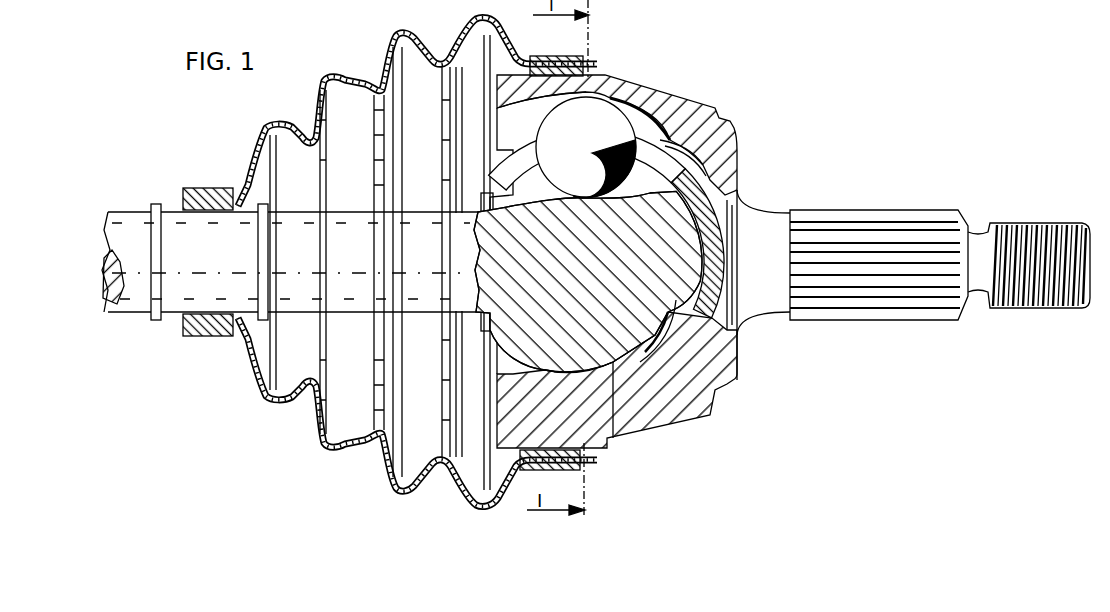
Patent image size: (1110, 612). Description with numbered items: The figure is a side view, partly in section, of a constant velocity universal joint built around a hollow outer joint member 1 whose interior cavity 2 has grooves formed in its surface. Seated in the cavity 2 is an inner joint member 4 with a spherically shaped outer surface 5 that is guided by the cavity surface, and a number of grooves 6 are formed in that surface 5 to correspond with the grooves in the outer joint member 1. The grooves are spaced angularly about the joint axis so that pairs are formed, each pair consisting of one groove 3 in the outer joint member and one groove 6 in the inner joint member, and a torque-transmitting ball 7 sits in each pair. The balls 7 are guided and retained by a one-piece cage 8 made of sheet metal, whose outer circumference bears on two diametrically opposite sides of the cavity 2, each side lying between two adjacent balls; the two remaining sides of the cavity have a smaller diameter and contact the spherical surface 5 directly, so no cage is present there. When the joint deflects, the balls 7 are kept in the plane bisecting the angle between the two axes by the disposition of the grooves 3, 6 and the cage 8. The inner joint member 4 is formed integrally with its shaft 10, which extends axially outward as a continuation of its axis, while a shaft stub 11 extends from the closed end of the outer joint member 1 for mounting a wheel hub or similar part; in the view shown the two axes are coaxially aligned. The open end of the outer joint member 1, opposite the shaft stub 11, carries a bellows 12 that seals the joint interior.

The outer joint member 1 is at (713, 363).
The interior cavity 2 is at (683, 357).
The groove in the outer joint member 3 is at (653, 140).
The inner joint member 4 is at (628, 345).
The spherically shaped outer surface 5 is at (628, 380).
The groove in the inner joint member 6 is at (647, 197).
The torque-transmitting ball 7 is at (592, 120).
The cage 8 is at (670, 168).
The shaft 10 is at (302, 287).
The shaft stub 11 is at (885, 288).
The bellows 12 is at (393, 486).